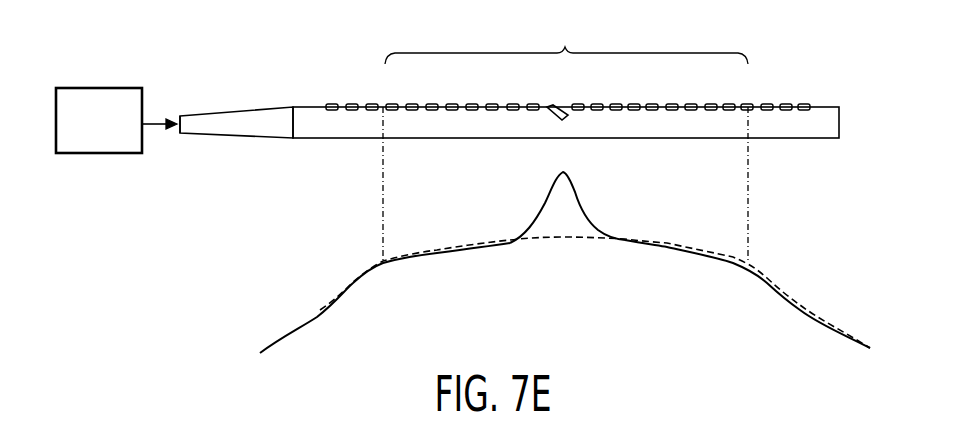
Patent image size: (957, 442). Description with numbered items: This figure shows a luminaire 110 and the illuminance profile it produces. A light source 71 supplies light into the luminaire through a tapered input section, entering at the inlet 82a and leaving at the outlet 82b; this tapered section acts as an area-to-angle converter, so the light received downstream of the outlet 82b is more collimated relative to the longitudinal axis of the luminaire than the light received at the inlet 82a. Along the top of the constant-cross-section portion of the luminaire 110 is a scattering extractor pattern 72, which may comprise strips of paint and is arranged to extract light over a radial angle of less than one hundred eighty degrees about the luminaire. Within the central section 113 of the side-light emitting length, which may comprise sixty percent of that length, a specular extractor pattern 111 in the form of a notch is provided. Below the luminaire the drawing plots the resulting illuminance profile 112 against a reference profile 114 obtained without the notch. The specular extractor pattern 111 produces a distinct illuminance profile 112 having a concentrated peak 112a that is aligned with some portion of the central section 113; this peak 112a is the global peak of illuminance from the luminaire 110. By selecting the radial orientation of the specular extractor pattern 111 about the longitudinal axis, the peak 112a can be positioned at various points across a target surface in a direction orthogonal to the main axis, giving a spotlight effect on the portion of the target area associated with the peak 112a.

The light source 71 is at (123, 153).
The inlet 82a is at (179, 117).
The outlet 82b is at (288, 127).
The luminaire 110 is at (295, 70).
The scattering extractor pattern 72 is at (392, 103).
The central section 113 is at (565, 141).
The specular extractor pattern 111 is at (553, 114).
The illuminance profile 112 is at (587, 217).
The peak 112a is at (566, 169).
The reference tissue surface 114 is at (573, 241).